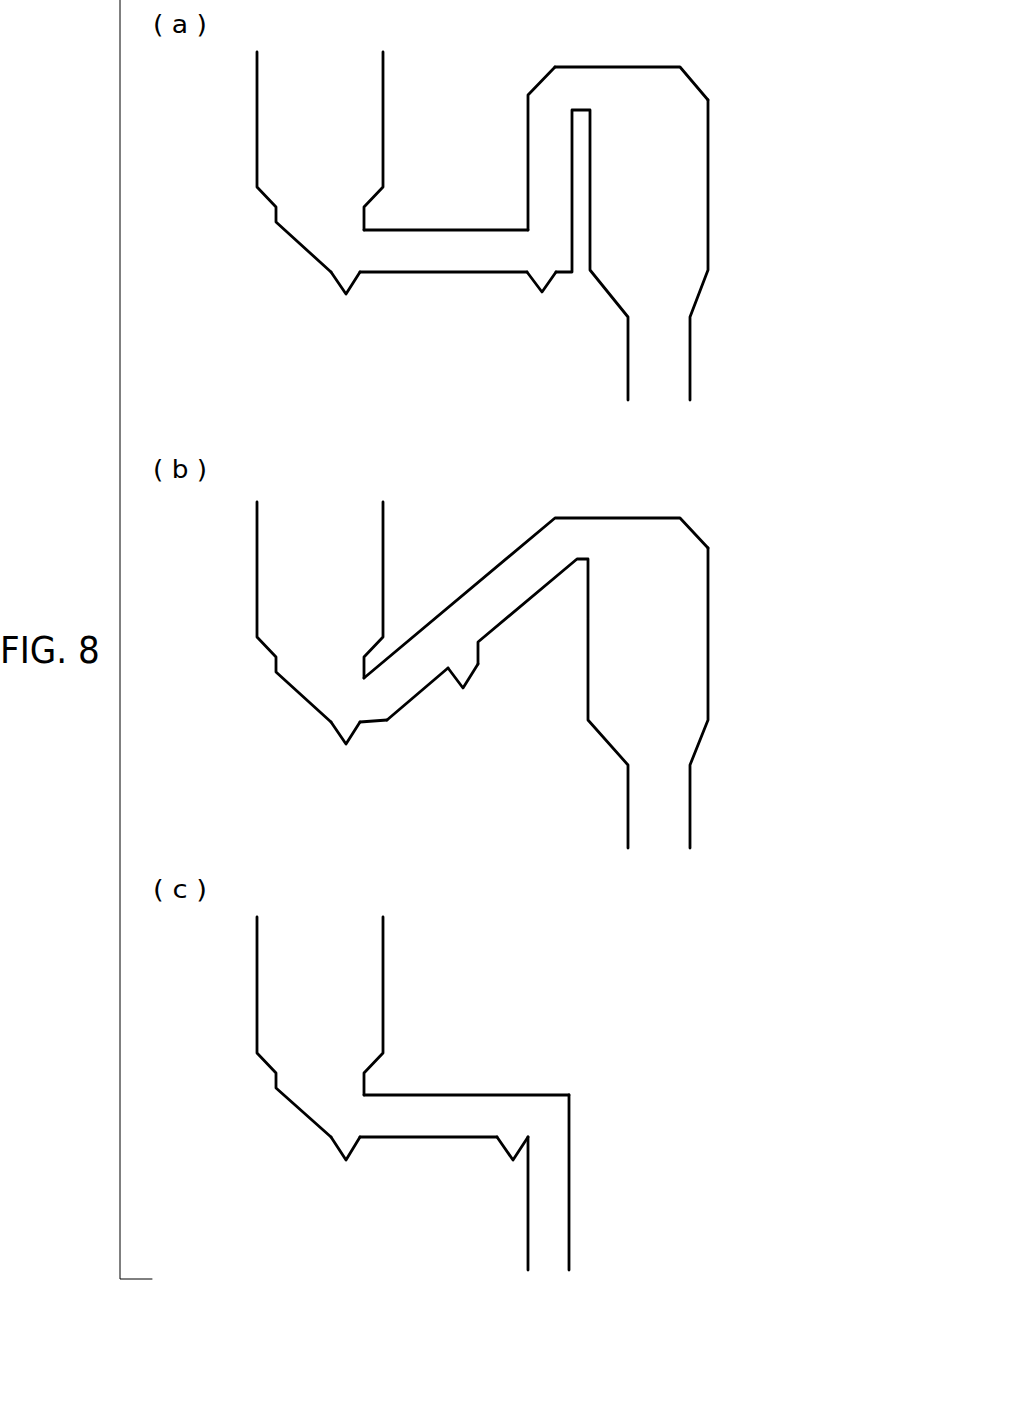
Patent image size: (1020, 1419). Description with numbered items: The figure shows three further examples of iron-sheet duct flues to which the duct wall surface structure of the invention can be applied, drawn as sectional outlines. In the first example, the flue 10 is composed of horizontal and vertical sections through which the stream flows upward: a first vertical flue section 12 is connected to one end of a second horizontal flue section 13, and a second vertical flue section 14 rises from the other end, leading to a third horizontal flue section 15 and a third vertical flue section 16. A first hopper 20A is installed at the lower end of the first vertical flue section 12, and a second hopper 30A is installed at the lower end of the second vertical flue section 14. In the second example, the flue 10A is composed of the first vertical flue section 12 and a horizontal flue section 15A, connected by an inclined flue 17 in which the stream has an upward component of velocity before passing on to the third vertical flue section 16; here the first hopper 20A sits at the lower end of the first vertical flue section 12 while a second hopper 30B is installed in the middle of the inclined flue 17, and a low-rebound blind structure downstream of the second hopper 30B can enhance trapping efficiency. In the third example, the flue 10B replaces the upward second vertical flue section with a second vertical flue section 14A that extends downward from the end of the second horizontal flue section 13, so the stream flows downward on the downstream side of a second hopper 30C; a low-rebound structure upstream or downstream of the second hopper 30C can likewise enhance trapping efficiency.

The flue 10 is at (448, 289).
The flue 10A is at (455, 729).
The flue 10B is at (537, 1059).
The first vertical flue section 12 is at (368, 137).
The second horizontal flue section 13 is at (440, 243).
The second vertical flue section 14 is at (547, 138).
The second vertical flue section 14A is at (552, 1197).
The third horizontal flue section 15 is at (580, 87).
The horizontal flue section 15A is at (585, 533).
The third vertical flue section 16 is at (680, 170).
The inclined flue 17 is at (503, 598).
The first hopper 20A is at (335, 283).
The second hopper 30A is at (550, 287).
The second hopper 30B is at (473, 680).
The second hopper 30C is at (503, 1158).